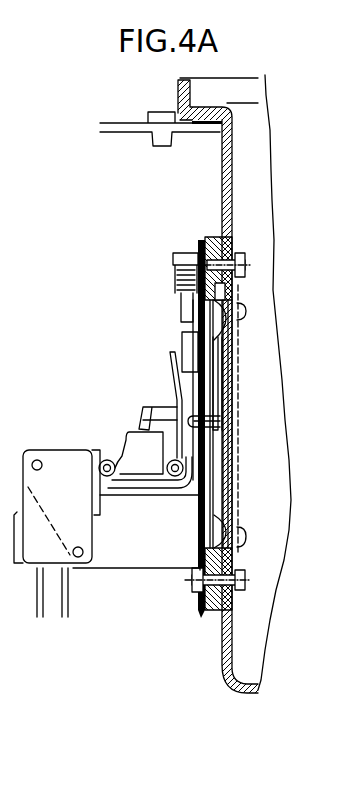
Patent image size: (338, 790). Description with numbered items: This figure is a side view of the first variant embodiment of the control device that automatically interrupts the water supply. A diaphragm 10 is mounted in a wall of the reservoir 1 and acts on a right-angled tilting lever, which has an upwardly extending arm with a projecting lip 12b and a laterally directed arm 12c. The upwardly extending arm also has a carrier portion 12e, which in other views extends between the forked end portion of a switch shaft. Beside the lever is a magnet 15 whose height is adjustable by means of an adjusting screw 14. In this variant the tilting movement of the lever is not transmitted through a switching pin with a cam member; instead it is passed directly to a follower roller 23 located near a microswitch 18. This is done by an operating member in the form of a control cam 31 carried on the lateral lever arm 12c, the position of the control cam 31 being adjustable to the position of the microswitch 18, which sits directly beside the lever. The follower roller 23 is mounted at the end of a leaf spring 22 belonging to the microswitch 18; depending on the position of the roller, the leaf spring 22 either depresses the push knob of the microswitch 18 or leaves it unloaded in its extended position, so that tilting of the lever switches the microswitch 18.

The reservoir 1 is at (222, 172).
The diaphragm 10 is at (225, 352).
The projecting lip 12b is at (170, 353).
The laterally directed arm 12c is at (148, 483).
The carrier portion 12e is at (143, 407).
The adjusting screw 14 is at (176, 255).
The magnet 15 is at (188, 337).
The microswitch 18 is at (38, 555).
The leaf spring 22 is at (97, 508).
The follower roller 23 is at (108, 460).
The control cam 31 is at (134, 428).